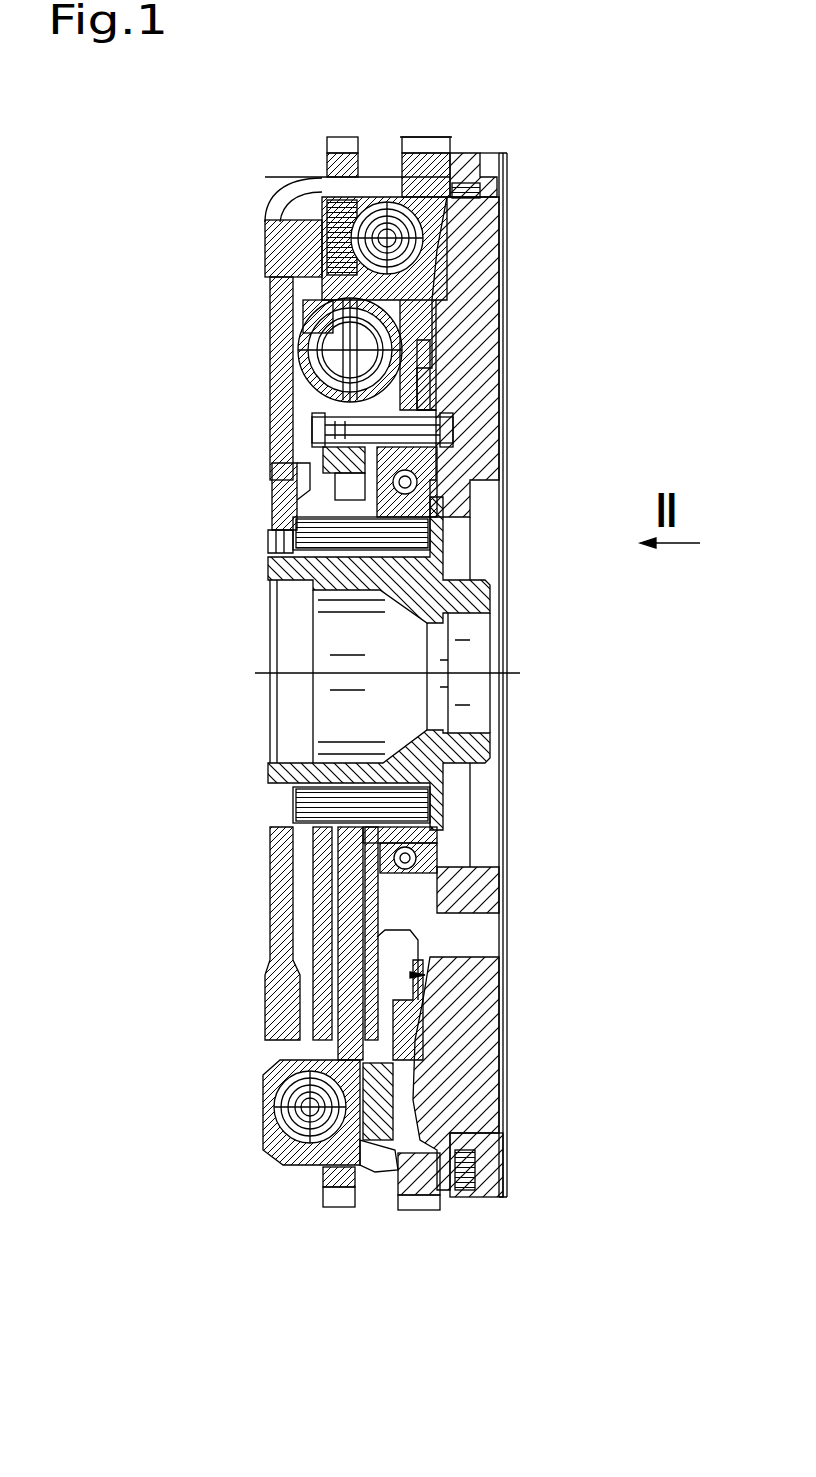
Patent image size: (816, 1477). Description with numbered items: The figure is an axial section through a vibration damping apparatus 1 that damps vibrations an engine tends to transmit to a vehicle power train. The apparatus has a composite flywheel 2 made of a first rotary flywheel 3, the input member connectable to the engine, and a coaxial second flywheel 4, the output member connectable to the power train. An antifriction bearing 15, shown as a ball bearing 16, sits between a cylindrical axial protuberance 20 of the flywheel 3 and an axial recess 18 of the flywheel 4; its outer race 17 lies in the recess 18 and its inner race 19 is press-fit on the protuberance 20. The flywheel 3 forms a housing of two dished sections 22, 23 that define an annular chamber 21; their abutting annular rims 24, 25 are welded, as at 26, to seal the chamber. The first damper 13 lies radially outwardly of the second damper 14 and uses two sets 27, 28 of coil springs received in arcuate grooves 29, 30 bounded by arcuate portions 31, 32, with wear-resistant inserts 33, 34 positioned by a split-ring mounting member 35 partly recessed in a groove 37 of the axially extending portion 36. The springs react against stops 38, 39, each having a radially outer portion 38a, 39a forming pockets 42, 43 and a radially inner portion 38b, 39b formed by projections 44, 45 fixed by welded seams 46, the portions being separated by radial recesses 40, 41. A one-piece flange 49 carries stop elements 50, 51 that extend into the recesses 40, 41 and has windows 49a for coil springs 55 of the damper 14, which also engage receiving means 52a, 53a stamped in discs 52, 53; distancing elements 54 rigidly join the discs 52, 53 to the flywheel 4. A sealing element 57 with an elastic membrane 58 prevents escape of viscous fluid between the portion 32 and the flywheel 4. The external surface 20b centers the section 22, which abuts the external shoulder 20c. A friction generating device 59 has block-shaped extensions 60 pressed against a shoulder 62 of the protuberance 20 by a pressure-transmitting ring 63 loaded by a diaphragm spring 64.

The vibration damping apparatus 1 is at (543, 89).
The composite flywheel 2 is at (518, 66).
The first rotary flywheel 3 is at (276, 300).
The second flywheel 4 is at (465, 1060).
The first damper 13 is at (297, 187).
The second damper 14 is at (297, 360).
The antifriction bearing 15 is at (450, 853).
The ball bearing 16 is at (423, 867).
The outer race 17 is at (440, 871).
The axial recess 18 is at (420, 890).
The inner race 19 is at (443, 847).
The cylindrical axial protuberance 20 is at (438, 745).
The external surface 20b is at (270, 775).
The external shoulder 20c is at (268, 600).
The annular chamber 21 is at (262, 1124).
The dished section 22 is at (280, 872).
The dished section 23 is at (418, 1020).
The annular rim 24 is at (341, 175).
The annular rim 25 is at (380, 205).
The weld 26 is at (368, 180).
The set of coil springs 27 is at (272, 1115).
The set of coil springs 28 is at (432, 248).
The arcuate groove 29 is at (265, 1092).
The arcuate groove 30 is at (465, 232).
The arcuate portion 31 is at (280, 1073).
The arcuate portion 32 is at (470, 200).
The wear-resistant insert 33 is at (283, 1152).
The wear-resistant insert 34 is at (480, 167).
The mounting member 35 is at (322, 1190).
The axially extending portion 36 is at (302, 1170).
The groove 37 is at (330, 1200).
The stop 38 is at (267, 262).
The radially outer portion 38a is at (300, 197).
The radially inner portion 38b is at (435, 262).
The stop 39 is at (390, 1135).
The radially outer portion 39a is at (480, 1185).
The radially inner portion 39b is at (460, 1102).
The radial recess 40 is at (303, 176).
The radial recess 41 is at (388, 1167).
The pocket 42 is at (267, 187).
The pocket 43 is at (437, 1197).
The projection 44 is at (285, 313).
The projection 45 is at (308, 1040).
The welded seam 46 is at (437, 282).
The flange 49 is at (322, 900).
The window 49a is at (432, 330).
The stop element 50 is at (273, 237).
The stop element 51 is at (347, 1210).
The disc 52 is at (345, 975).
The receiving means 52a is at (300, 358).
The disc 53 is at (417, 997).
The receiving means 53a is at (425, 385).
The distancing element 54 is at (455, 430).
The coil spring 55 is at (285, 388).
The sealing element 57 is at (425, 975).
The membrane 58 is at (423, 987).
The friction generating device 59 is at (290, 508).
The block-shaped extension 60 is at (273, 467).
The shoulder 62 is at (437, 505).
The pressure-transmitting ring 63 is at (290, 540).
The diaphragm spring 64 is at (270, 488).